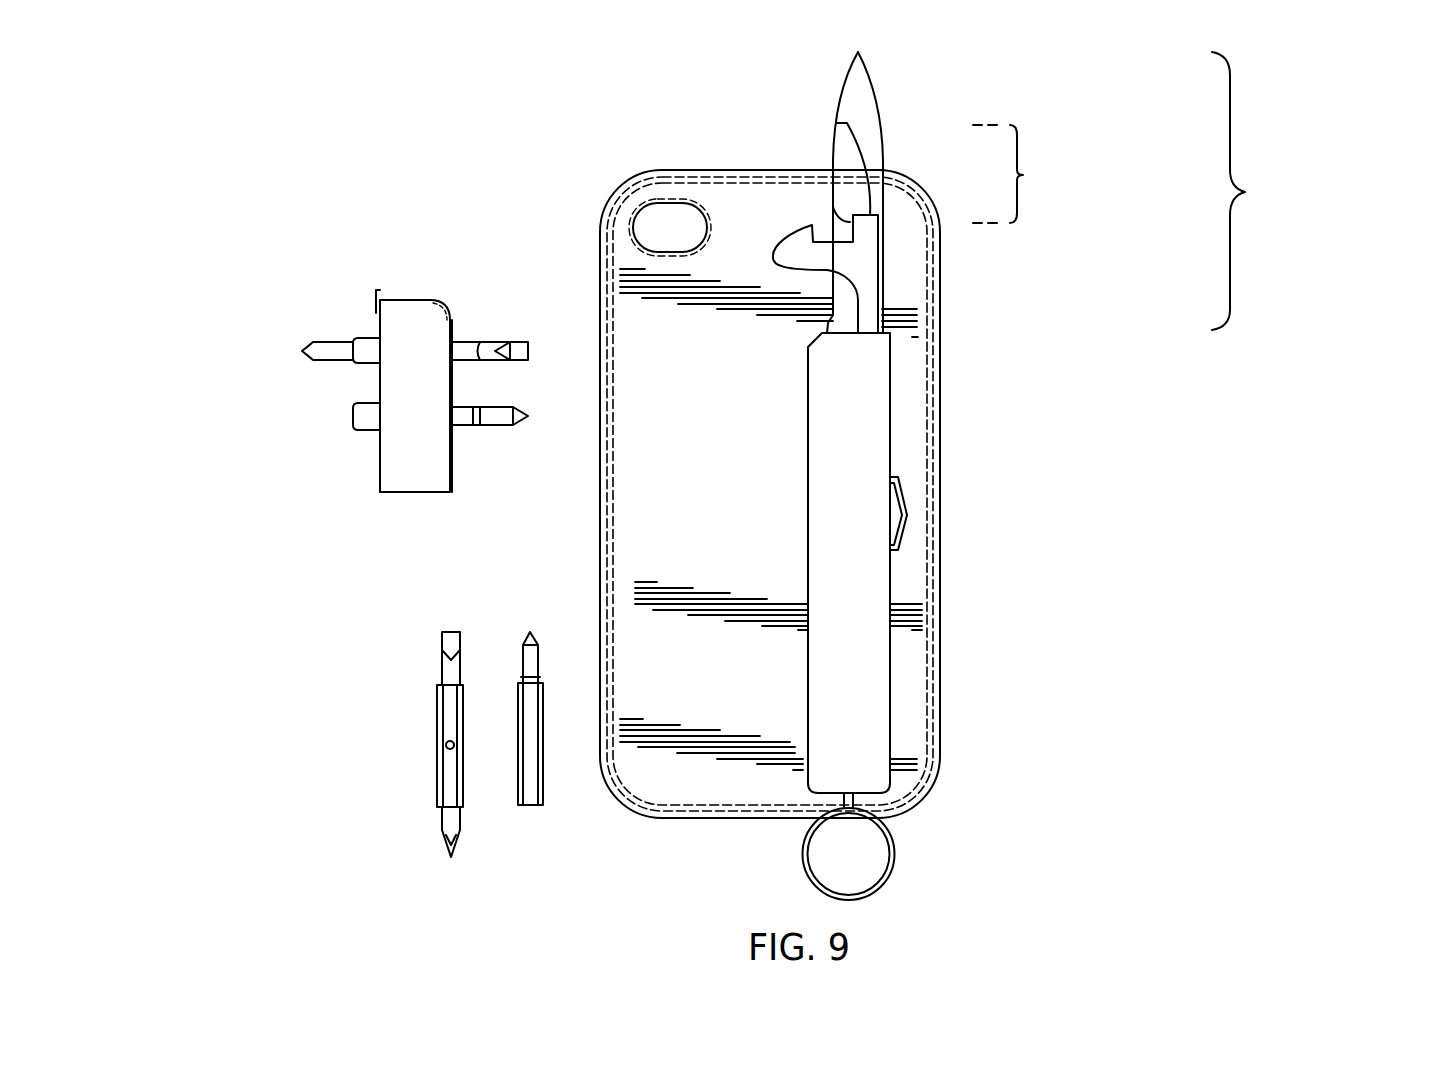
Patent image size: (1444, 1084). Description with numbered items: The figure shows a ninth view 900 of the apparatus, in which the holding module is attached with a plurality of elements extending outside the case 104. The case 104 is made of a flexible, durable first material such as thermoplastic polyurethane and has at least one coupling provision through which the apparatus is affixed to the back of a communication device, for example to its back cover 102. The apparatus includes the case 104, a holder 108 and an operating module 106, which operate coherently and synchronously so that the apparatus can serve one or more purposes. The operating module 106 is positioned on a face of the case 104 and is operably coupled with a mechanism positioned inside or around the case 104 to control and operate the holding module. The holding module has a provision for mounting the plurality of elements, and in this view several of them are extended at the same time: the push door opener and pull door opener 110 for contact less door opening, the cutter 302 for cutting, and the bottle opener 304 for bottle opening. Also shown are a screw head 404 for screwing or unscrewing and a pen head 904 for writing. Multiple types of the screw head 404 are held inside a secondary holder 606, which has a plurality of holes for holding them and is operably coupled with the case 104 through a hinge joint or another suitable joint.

The ninth view 900 is at (163, 75).
The back cover 102 is at (637, 327).
The case 104 is at (865, 405).
The operating module 106 is at (893, 537).
The holder 108 is at (895, 847).
The push door opener and pull door opener 110 is at (870, 255).
The cutter 302 is at (1245, 192).
The bottle opener 304 is at (1023, 175).
The screw head 404 is at (365, 340).
The secondary holder 606 is at (417, 462).
The pen head 904 is at (363, 405).